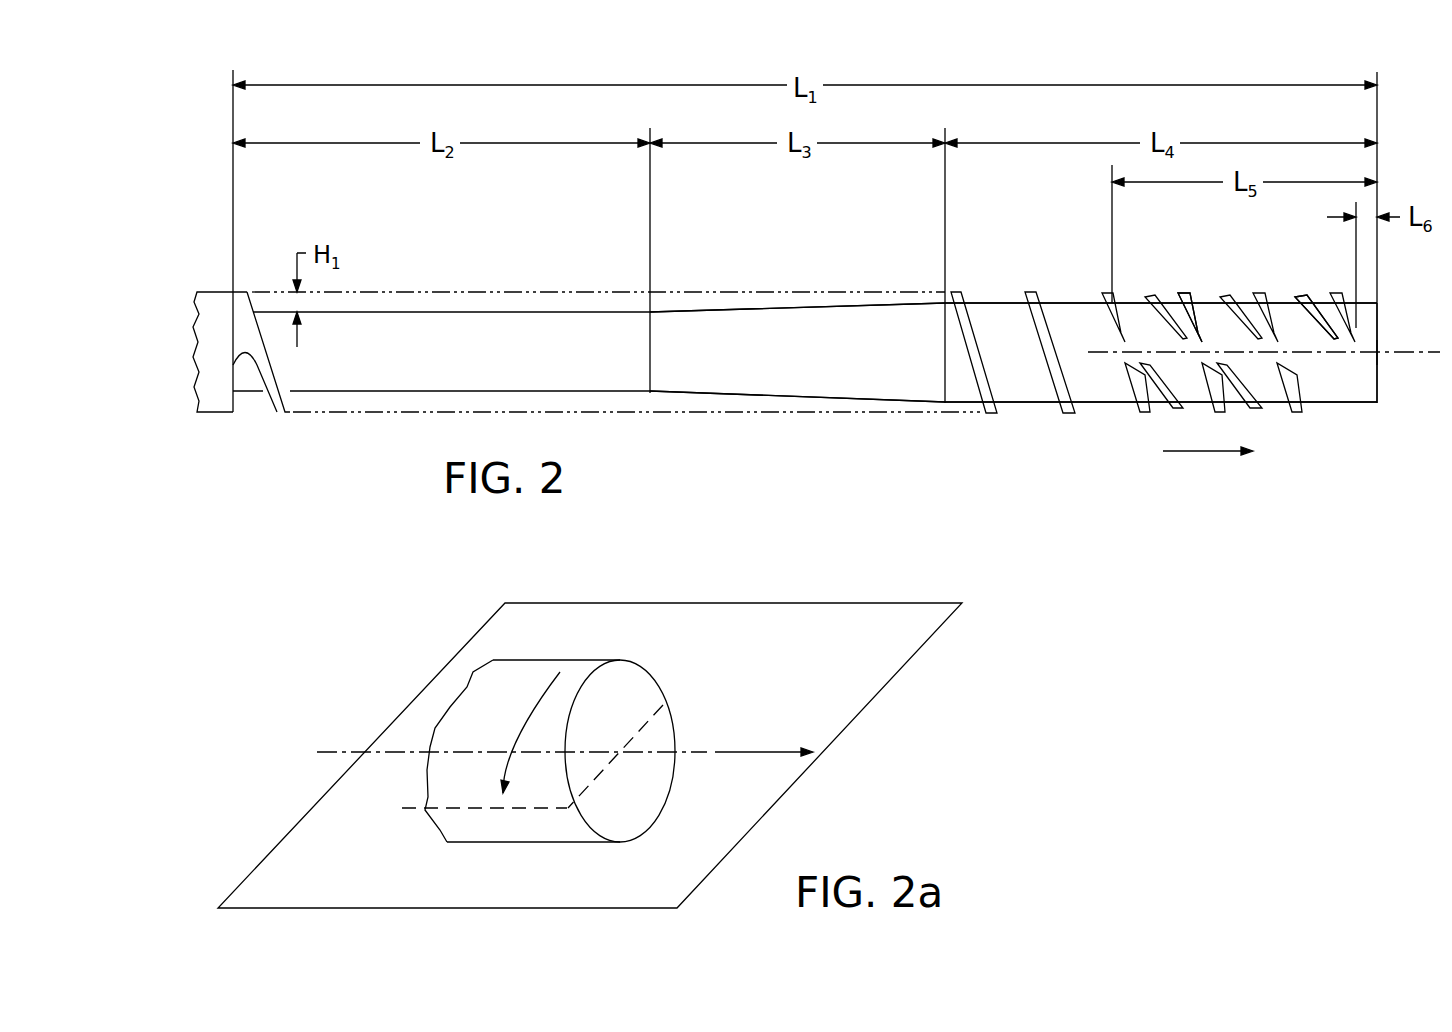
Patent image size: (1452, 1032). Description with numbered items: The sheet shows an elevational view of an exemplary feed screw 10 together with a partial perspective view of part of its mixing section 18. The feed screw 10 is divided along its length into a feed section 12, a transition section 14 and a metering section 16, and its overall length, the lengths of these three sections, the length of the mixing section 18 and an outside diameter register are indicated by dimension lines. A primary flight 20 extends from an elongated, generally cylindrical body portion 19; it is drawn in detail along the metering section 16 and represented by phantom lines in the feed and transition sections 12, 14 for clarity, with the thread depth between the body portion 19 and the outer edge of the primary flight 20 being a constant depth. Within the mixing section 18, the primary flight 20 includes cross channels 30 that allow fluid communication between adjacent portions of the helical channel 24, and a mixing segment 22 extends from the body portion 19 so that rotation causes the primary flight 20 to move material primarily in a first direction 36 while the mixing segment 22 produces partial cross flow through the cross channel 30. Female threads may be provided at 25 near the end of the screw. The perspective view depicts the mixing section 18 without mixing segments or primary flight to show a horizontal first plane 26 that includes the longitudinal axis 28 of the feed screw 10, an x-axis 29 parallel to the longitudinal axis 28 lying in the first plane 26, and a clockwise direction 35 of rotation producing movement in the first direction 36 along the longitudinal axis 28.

In FIG. 2, the feed screw 10 is at (832, 427).
In FIG. 2, the feed section 12 is at (410, 275).
In FIG. 2, the transition section 14 is at (732, 283).
In FIG. 2, the metering section 16 is at (1158, 428).
In FIG. 2, the mixing section 18 is at (1228, 252).
In FIG. 2A, the mixing section 18 is at (588, 660).
In FIG. 2, the body portion 19 is at (510, 312).
In FIG. 2, the primary flight 20 is at (1293, 412).
In FIG. 2, the mixing segment 22 is at (1300, 297).
In FIG. 2, the helical channel 24 is at (1207, 297).
In FIG. 2, the female threads 25 is at (1378, 360).
In FIG. 2, the horizontal first plane 26 is at (1433, 353).
In FIG. 2A, the horizontal first plane 26 is at (803, 681).
In FIG. 2, the longitudinal axis 28 is at (1405, 357).
In FIG. 2A, the longitudinal axis 28 is at (685, 753).
In FIG. 2A, the x-axis 29 is at (477, 808).
In FIG. 2, the cross channel 30 is at (1123, 345).
In FIG. 2A, the clockwise direction 35 is at (527, 732).
In FIG. 2, the first direction 36 is at (1208, 463).
In FIG. 2A, the first direction 36 is at (763, 753).